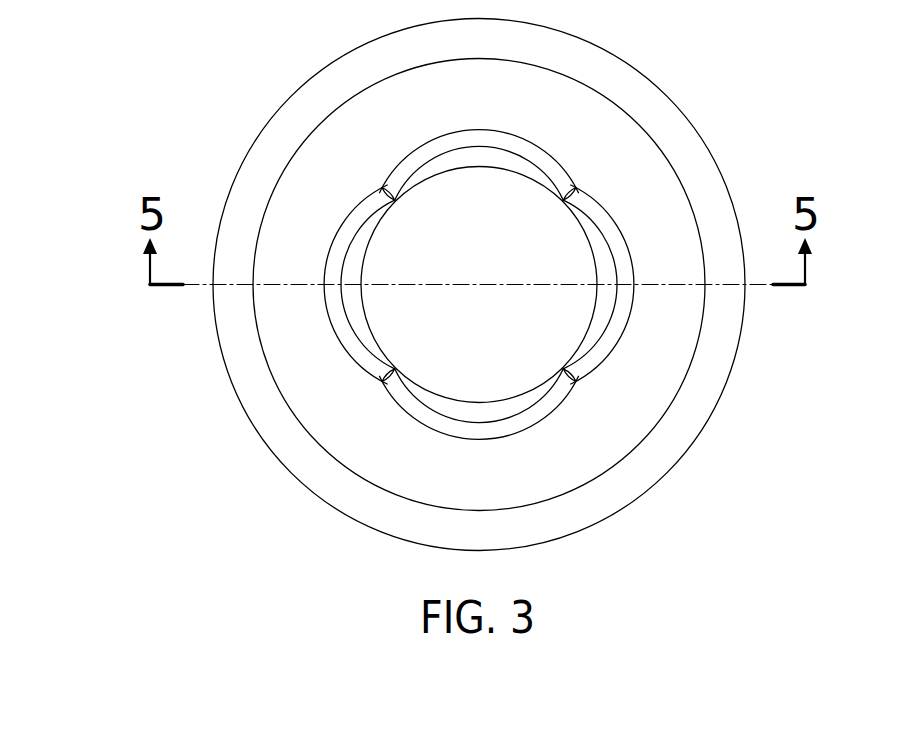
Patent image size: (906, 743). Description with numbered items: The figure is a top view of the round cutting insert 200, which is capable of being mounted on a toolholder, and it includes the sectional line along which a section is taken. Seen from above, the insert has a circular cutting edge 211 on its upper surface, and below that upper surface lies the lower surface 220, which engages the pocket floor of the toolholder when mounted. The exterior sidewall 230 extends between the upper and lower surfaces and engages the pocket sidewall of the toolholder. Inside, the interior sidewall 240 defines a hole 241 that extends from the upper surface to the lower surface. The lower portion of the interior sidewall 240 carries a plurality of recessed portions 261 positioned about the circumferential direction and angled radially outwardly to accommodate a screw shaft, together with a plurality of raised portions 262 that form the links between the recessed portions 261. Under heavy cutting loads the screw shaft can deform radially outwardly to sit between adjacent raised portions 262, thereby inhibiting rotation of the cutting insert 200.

The cutting insert 200 is at (217, 97).
The circular cutting edge 211 is at (705, 143).
The lower surface 220 is at (678, 363).
The exterior sidewall 230 is at (670, 456).
The interior sidewall 240 is at (503, 156).
The hole 241 is at (531, 198).
The recessed portions 261 is at (456, 159).
The raised portions 262 is at (396, 207).